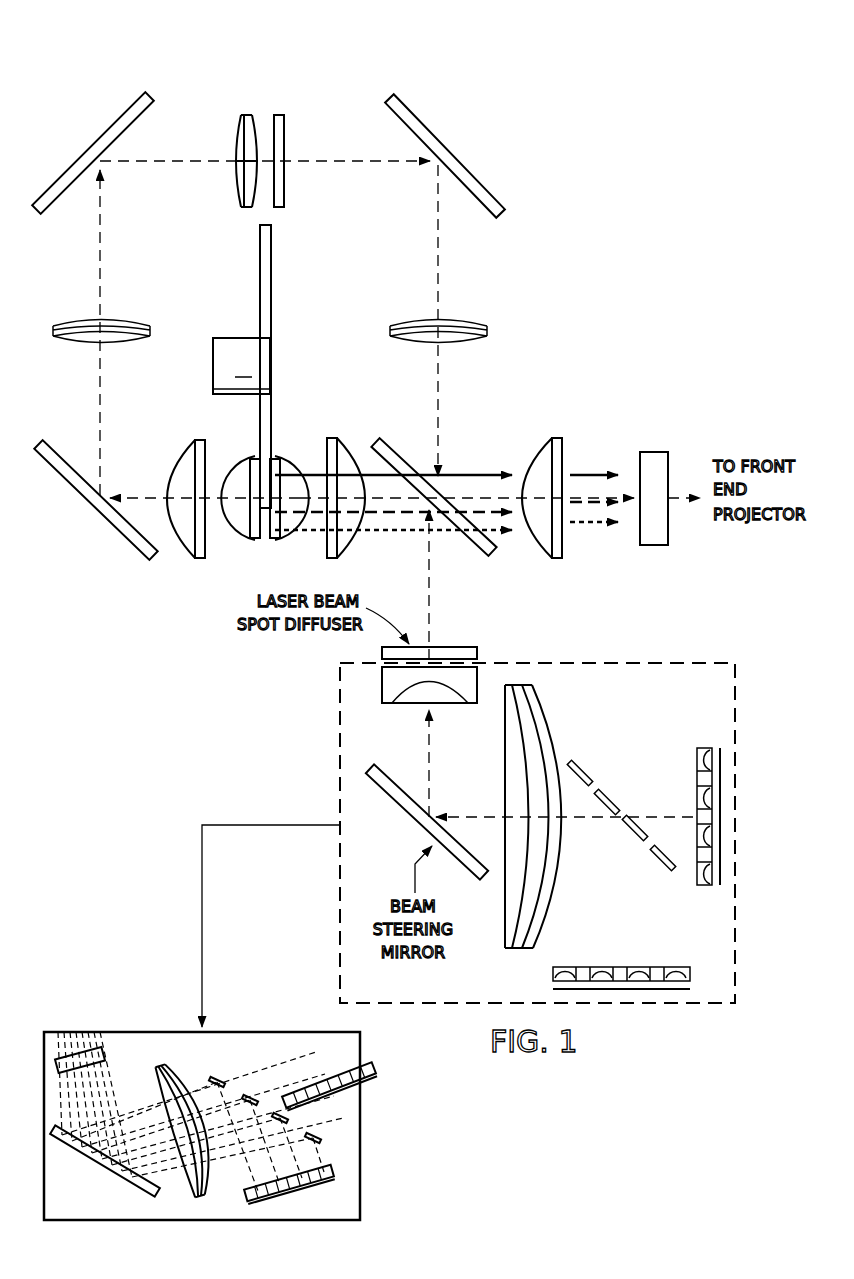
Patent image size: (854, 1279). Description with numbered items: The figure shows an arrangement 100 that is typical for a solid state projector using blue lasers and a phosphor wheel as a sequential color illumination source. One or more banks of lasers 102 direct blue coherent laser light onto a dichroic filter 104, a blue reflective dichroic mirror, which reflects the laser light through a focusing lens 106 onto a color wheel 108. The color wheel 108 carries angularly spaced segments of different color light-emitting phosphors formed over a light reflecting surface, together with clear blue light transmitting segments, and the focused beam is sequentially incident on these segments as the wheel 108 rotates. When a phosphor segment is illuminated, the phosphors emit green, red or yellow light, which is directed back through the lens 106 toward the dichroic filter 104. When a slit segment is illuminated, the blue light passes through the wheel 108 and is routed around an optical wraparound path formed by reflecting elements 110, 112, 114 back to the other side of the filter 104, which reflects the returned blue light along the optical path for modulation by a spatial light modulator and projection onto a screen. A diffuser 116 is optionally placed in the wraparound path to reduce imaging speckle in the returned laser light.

The arrangement 100 is at (597, 127).
The banks of lasers 102 is at (692, 775).
The dichroic filter 104 is at (494, 554).
The focusing lens 106 is at (295, 448).
The color wheel 108 is at (260, 306).
The reflecting element 110 is at (108, 528).
The reflecting element 112 is at (107, 132).
The reflecting element 114 is at (433, 132).
The diffuser 116 is at (287, 132).